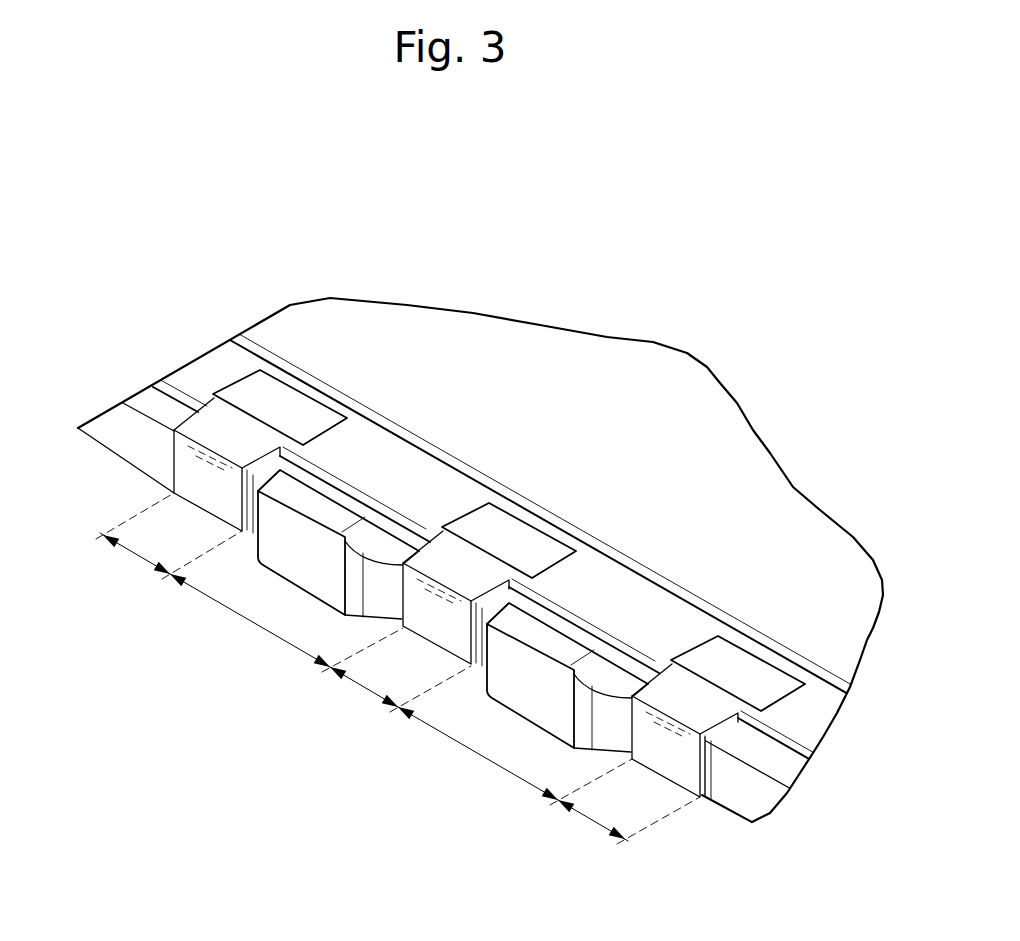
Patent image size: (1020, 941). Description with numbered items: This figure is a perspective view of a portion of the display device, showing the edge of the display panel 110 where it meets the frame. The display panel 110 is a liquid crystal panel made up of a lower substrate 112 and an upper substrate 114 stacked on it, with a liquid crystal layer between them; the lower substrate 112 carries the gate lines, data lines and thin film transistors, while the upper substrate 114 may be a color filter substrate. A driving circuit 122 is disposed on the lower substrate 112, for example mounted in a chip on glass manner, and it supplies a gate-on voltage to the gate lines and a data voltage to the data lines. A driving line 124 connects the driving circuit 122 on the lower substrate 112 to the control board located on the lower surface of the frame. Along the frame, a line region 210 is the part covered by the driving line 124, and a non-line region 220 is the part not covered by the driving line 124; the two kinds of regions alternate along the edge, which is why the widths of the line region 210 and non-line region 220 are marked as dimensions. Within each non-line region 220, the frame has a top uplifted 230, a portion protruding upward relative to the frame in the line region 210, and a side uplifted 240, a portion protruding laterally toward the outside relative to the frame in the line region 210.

The display panel 110 is at (160, 253).
The lower substrate 112 is at (205, 373).
The upper substrate 114 is at (283, 330).
The driving circuit 122 is at (297, 407).
The driving line 124 is at (187, 466).
The top uplifted 230 is at (325, 505).
The side uplifted 240 is at (290, 563).
The line region 210 is at (398, 671).
The non-line region 220 is at (364, 687).